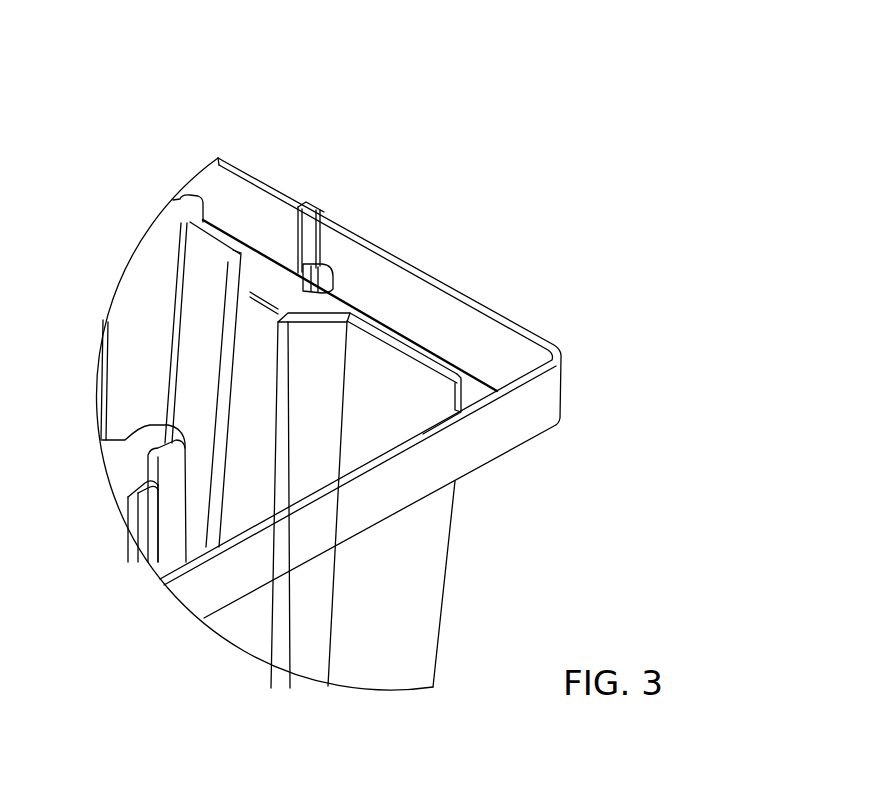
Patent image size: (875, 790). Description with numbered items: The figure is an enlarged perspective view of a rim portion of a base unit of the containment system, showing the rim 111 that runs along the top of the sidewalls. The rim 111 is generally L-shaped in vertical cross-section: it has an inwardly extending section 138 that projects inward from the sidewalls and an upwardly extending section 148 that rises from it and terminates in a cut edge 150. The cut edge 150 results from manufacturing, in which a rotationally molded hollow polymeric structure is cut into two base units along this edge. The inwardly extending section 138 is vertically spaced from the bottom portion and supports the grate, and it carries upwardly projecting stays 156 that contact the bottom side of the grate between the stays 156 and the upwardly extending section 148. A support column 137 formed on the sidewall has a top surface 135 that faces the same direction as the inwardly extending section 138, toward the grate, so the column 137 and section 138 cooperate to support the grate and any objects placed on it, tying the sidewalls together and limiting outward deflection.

The rim 111 is at (560, 390).
The top surface 135 is at (287, 287).
The support column 137 is at (313, 383).
The inwardly extending section 138 is at (425, 350).
The upwardly extending section 148 is at (373, 265).
The cut edge 150 is at (450, 283).
The stay 156 is at (323, 268).